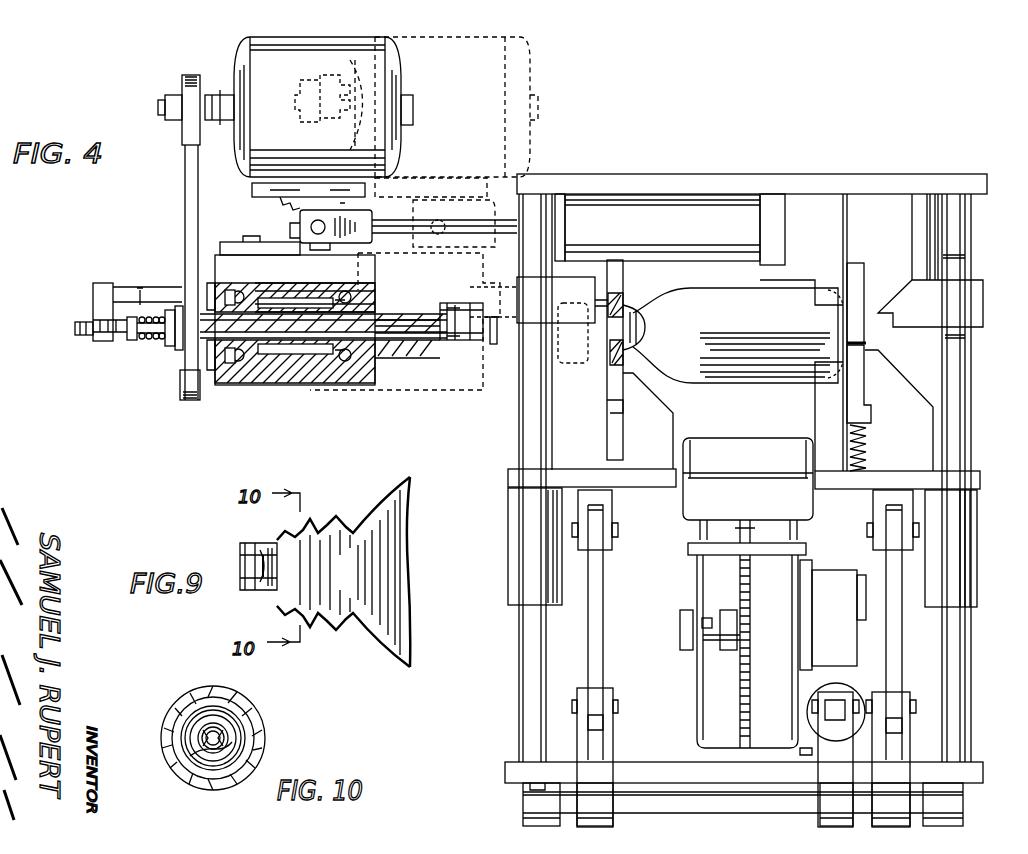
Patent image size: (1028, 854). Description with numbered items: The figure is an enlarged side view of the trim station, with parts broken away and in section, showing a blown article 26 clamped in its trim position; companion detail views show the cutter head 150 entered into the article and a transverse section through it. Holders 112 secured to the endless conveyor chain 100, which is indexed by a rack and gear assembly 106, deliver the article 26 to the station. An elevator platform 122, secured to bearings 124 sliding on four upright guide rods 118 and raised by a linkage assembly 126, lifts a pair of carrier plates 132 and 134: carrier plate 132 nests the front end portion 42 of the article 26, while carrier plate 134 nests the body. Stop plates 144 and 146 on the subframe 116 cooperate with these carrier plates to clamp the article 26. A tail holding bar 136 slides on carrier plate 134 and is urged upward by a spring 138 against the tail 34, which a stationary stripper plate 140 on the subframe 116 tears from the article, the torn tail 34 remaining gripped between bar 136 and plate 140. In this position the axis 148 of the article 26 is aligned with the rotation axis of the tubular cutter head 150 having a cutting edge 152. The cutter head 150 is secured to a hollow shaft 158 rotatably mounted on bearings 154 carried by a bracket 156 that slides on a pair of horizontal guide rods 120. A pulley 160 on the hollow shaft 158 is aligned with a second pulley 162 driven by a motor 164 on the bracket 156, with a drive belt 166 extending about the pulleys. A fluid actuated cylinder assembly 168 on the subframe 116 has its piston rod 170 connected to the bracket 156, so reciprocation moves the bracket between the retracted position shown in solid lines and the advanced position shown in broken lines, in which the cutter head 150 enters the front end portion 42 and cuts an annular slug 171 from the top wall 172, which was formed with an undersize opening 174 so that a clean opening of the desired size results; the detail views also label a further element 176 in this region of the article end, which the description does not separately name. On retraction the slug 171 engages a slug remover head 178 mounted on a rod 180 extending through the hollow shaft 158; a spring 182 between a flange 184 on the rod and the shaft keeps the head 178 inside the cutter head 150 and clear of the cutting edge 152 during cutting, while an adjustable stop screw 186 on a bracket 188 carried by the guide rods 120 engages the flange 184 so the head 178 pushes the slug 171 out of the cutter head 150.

In FIG. 4, the article 26 is at (731, 311).
In FIG. 9, the article 26 is at (387, 475).
In FIG. 10, the article 26 is at (240, 696).
In FIG. 4, the tail 34 is at (866, 344).
In FIG. 4, the front end portion 42 is at (616, 343).
In FIG. 4, the conveyor chain 100 is at (740, 597).
In FIG. 4, the rack and gear assembly 106 is at (832, 572).
In FIG. 4, the holders 112 is at (728, 438).
In FIG. 4, the subframe 116 is at (937, 176).
In FIG. 4, the upright guide rods 118 is at (953, 658).
In FIG. 4, the horizontal guide rods 120 is at (416, 307).
In FIG. 4, the elevator platform 122 is at (620, 470).
In FIG. 4, the bearings 124 is at (980, 541).
In FIG. 4, the linkage assembly 126 is at (616, 626).
In FIG. 4, the carrier plate 132 is at (607, 405).
In FIG. 4, the carrier plate 134 is at (816, 400).
In FIG. 4, the tail holding bar 136 is at (866, 397).
In FIG. 4, the spring 138 is at (866, 453).
In FIG. 4, the stripper plate 140 is at (855, 330).
In FIG. 4, the stop plate 144 is at (640, 292).
In FIG. 4, the stop plate 146 is at (838, 251).
In FIG. 4, the axis 148 is at (740, 328).
In FIG. 4, the cutter head 150 is at (472, 352).
In FIG. 9, the cutter head 150 is at (253, 542).
In FIG. 10, the cutter head 150 is at (185, 756).
In FIG. 4, the cutting edge 152 is at (490, 345).
In FIG. 4, the bearings 154 is at (248, 290).
In FIG. 4, the bracket 156 is at (265, 385).
In FIG. 4, the hollow shaft 158 is at (416, 341).
In FIG. 4, the pulley 160 is at (200, 396).
In FIG. 4, the second pulley 162 is at (187, 78).
In FIG. 4, the motor 164 is at (243, 170).
In FIG. 4, the drive belt 166 is at (186, 186).
In FIG. 4, the fluid actuated cylinder assembly 168 is at (672, 240).
In FIG. 4, the piston rod 170 is at (503, 222).
In FIG. 4, the annular slug 171 is at (500, 334).
In FIG. 9, the top wall 172 is at (277, 540).
In FIG. 9, the opening 174 is at (277, 564).
In FIG. 10, the opening 174 is at (232, 737).
In FIG. 9, the valve sleeve 176 is at (263, 597).
In FIG. 10, the valve sleeve 176 is at (230, 746).
In FIG. 4, the slug remover head 178 is at (468, 342).
In FIG. 4, the rod 180 is at (386, 332).
In FIG. 4, the spring 182 is at (146, 340).
In FIG. 4, the flange 184 is at (131, 341).
In FIG. 4, the adjustable stop screw 186 is at (78, 332).
In FIG. 4, the bracket 188 is at (103, 283).